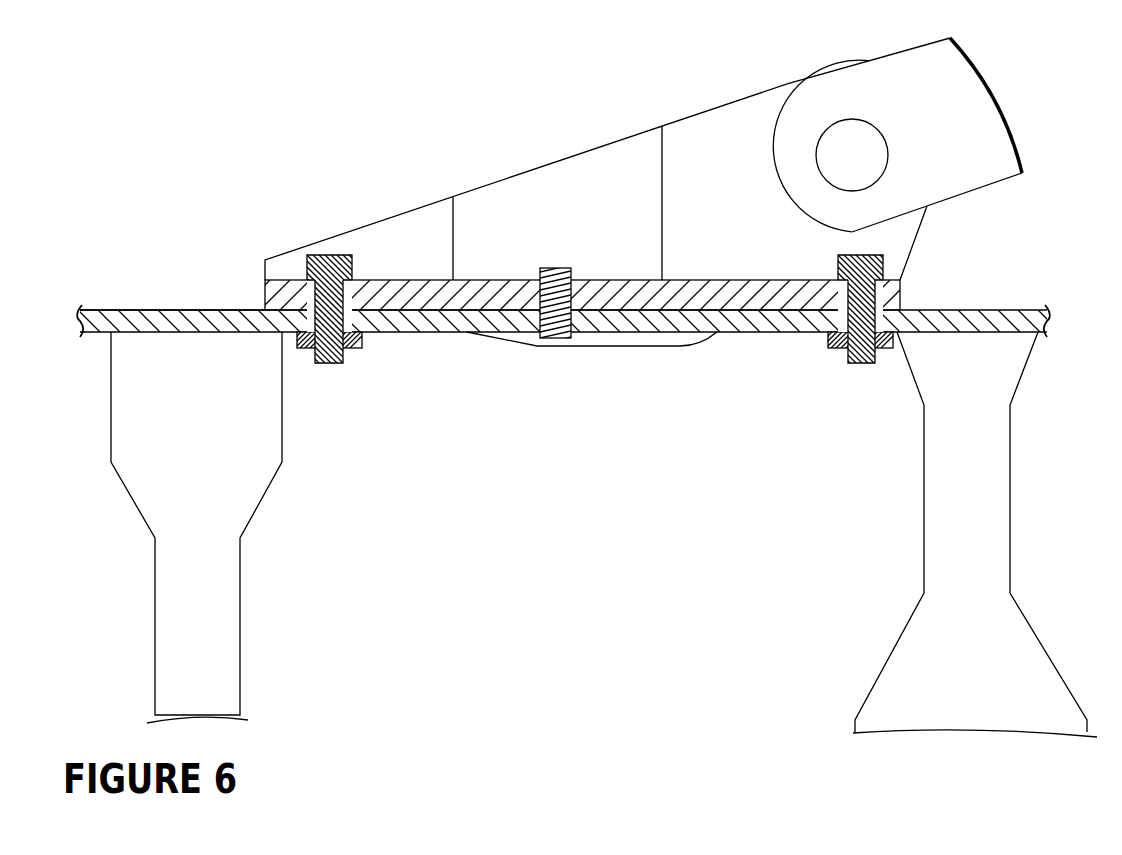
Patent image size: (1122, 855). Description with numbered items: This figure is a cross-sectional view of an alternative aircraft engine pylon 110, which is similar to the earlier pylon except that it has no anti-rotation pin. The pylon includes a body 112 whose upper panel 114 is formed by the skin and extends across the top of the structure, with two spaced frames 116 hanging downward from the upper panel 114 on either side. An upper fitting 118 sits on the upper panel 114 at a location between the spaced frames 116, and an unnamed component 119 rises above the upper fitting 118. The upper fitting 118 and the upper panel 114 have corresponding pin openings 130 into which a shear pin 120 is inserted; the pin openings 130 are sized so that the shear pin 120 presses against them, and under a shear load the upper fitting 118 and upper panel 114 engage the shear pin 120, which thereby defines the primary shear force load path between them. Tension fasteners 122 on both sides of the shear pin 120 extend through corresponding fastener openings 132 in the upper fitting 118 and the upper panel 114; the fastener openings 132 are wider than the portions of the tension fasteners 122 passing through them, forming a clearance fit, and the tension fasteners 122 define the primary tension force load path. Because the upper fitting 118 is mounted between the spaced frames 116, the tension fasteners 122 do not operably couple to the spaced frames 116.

The engine pylon 110 is at (203, 188).
The body 112 is at (127, 302).
The upper panel 114 is at (175, 310).
The spaced frames 116 is at (245, 498).
The upper fitting 118 is at (609, 273).
The lever arm 119 is at (913, 68).
The shear pin 120 is at (547, 267).
The tension fasteners 122 is at (323, 255).
The pin openings 130 is at (567, 297).
The fastener openings 132 is at (333, 364).